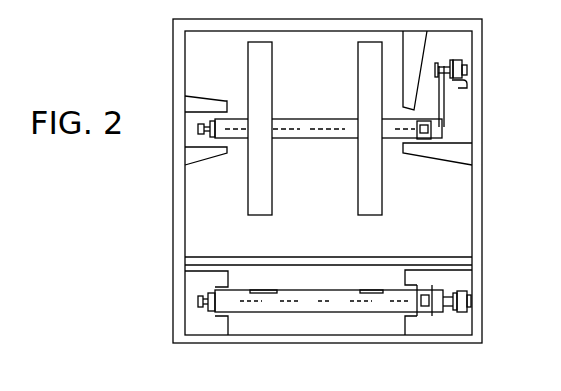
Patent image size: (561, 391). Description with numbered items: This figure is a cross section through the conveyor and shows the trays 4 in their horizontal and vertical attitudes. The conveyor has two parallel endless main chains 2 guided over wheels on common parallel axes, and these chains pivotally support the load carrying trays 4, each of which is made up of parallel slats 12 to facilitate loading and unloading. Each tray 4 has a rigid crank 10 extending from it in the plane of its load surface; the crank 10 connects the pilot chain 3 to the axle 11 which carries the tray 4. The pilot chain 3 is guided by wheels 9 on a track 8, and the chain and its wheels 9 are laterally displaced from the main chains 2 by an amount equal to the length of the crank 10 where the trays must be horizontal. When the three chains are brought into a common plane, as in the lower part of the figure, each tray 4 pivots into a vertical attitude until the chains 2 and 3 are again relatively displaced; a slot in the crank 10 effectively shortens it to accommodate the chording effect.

The main chains 2 is at (204, 137).
The pilot chain 3 is at (463, 67).
The tray 4 is at (282, 108).
The track 8 is at (467, 88).
The wheels 9 is at (457, 65).
The crank 10 is at (444, 107).
The axle 11 is at (333, 134).
The slats 12 is at (361, 80).